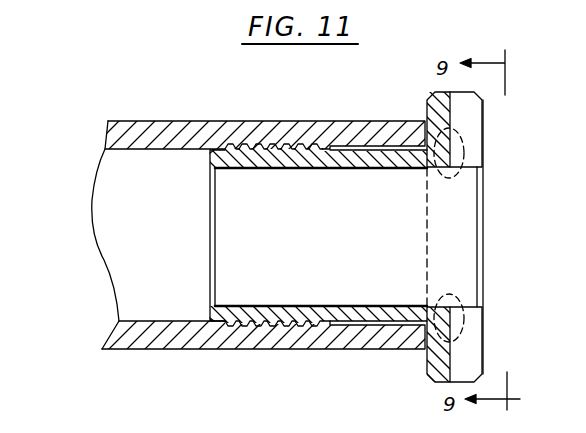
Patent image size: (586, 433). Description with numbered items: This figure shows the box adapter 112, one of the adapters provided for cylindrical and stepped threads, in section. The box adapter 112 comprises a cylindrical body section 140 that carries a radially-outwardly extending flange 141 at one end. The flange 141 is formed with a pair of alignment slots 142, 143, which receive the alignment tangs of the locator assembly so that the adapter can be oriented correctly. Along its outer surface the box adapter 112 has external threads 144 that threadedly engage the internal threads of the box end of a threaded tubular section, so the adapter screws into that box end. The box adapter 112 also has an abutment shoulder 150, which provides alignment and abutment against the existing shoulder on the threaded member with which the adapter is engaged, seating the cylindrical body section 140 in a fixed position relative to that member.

The box adapter 112 is at (212, 149).
The cylindrical body section 140 is at (305, 165).
The flange 141 is at (428, 95).
The alignment slot 142 is at (470, 117).
The alignment slot 143 is at (478, 352).
The external threads 144 is at (265, 148).
The abutment shoulder 150 is at (210, 158).